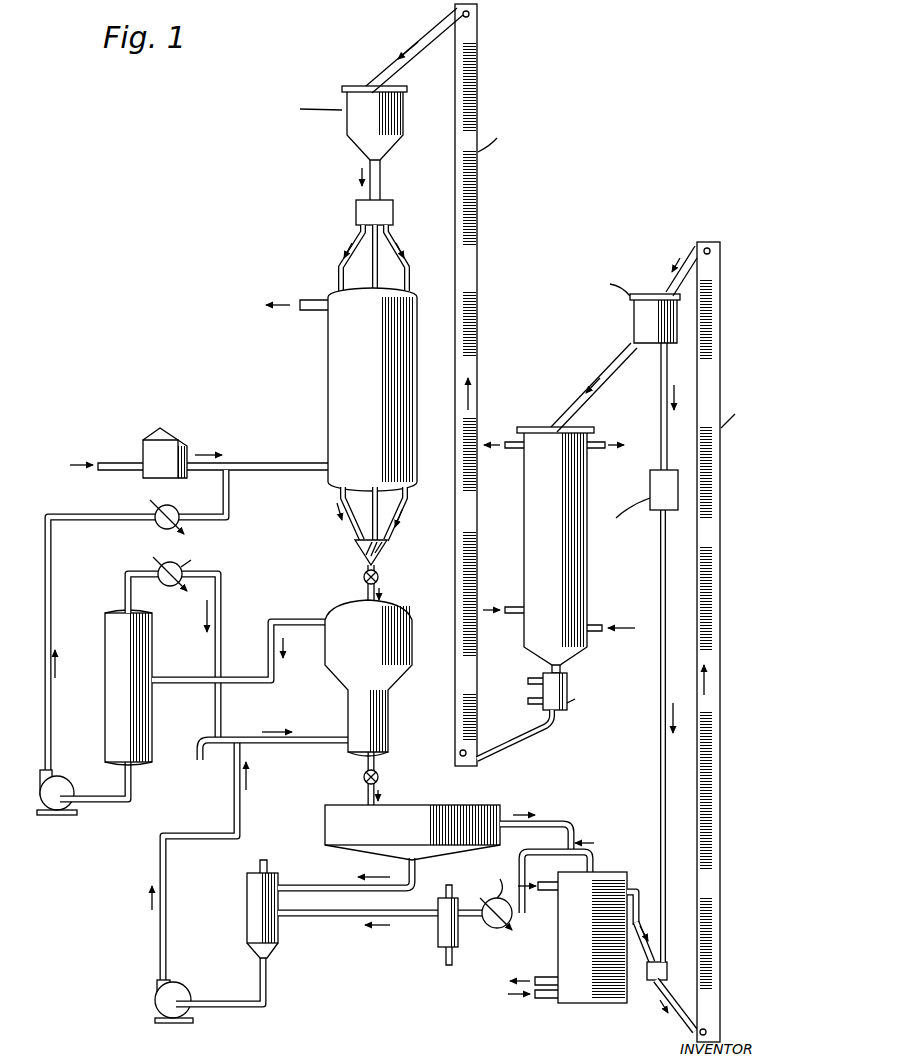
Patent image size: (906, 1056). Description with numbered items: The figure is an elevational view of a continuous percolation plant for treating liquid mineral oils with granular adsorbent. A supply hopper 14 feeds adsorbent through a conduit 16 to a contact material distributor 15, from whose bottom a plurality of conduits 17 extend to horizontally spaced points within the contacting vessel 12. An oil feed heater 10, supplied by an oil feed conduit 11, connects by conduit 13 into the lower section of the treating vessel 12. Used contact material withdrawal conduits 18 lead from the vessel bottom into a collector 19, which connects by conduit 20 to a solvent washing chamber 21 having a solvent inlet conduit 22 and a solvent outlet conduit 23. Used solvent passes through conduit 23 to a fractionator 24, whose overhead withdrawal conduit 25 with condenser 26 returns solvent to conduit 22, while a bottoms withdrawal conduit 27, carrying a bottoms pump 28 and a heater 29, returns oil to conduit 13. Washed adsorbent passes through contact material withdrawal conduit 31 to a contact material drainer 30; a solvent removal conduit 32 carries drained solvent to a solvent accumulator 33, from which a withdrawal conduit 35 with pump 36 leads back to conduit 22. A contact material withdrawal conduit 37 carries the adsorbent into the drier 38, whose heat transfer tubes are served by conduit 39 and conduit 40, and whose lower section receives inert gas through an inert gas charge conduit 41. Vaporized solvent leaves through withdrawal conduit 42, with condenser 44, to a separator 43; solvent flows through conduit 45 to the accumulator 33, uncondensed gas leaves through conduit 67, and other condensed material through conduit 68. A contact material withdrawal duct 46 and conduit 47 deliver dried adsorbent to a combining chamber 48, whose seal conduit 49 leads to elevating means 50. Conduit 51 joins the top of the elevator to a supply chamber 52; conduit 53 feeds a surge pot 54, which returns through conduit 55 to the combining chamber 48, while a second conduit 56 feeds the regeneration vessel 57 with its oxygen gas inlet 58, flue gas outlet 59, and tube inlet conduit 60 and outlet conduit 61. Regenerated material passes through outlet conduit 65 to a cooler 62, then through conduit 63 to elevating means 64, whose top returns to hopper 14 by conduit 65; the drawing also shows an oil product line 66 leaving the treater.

The oil feed heater 10 is at (158, 444).
The oil feed conduit 11 is at (118, 472).
The contacting vessel 12 is at (328, 398).
The conduit 13 is at (288, 463).
The supply hopper 14 is at (345, 125).
The contact material distributor 15 is at (374, 212).
The conduit 16 is at (381, 180).
The conduits 17 is at (339, 270).
The used contact material withdrawal conduits 18 is at (403, 506).
The collector 19 is at (381, 553).
The conduit 20 is at (379, 578).
The solvent washing chamber 21 is at (400, 612).
The solvent inlet conduit 22 is at (317, 738).
The solvent outlet conduit 23 is at (275, 680).
The fractionator 24 is at (152, 653).
The overhead withdrawal conduit 25 is at (125, 589).
The condenser 26 is at (165, 585).
The bottoms withdrawal conduit 27 is at (105, 803).
The bottoms pump 28 is at (82, 770).
The heater 29 is at (152, 525).
The contact material drainer 30 is at (417, 806).
The contact material withdrawal conduit 31 is at (362, 767).
The solvent removal conduit 32 is at (318, 886).
The solvent accumulator 33 is at (247, 919).
The withdrawal conduit 35 is at (234, 1012).
The pump 36 is at (155, 1000).
The contact material withdrawal conduit 37 is at (578, 827).
The drier 38 is at (596, 955).
The conduit 39 is at (547, 892).
The conduit 40 is at (547, 982).
The inert gas charge conduit 41 is at (540, 998).
The withdrawal conduit 42 is at (538, 847).
The separator 43 is at (438, 933).
The condenser 44 is at (480, 922).
The conduit 45 is at (306, 915).
The contact material withdrawal duct 46 is at (630, 888).
The conduit 47 is at (655, 947).
The combining chamber 48 is at (667, 972).
The seal conduit 49 is at (682, 1020).
The elevating means 50 is at (721, 716).
The conduit 51 is at (693, 257).
The supply chamber 52 is at (620, 309).
The conduit 53 is at (661, 370).
The surge pot 54 is at (638, 509).
The conduit 55 is at (660, 755).
The second conduit 56 is at (568, 402).
The regeneration vessel 57 is at (570, 475).
The inlet 58 is at (592, 624).
The outlet 59 is at (597, 446).
The inlet conduit 60 is at (510, 614).
The outlet conduit 61 is at (512, 451).
The cooler 62 is at (543, 691).
The conduit 63 is at (507, 738).
The elevating means 64 is at (478, 215).
The conduit 65 is at (412, 52).
The oil product pipe 66 is at (309, 312).
The conduit 67 is at (446, 889).
The conduit 68 is at (447, 967).